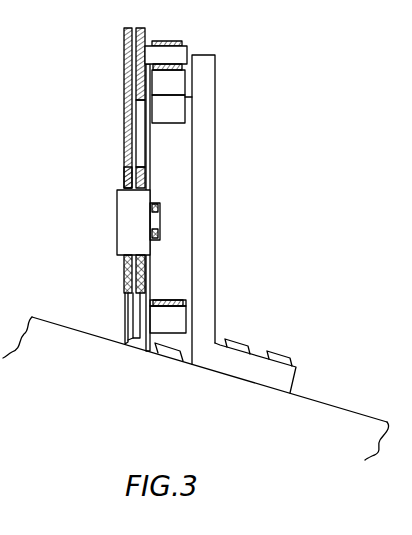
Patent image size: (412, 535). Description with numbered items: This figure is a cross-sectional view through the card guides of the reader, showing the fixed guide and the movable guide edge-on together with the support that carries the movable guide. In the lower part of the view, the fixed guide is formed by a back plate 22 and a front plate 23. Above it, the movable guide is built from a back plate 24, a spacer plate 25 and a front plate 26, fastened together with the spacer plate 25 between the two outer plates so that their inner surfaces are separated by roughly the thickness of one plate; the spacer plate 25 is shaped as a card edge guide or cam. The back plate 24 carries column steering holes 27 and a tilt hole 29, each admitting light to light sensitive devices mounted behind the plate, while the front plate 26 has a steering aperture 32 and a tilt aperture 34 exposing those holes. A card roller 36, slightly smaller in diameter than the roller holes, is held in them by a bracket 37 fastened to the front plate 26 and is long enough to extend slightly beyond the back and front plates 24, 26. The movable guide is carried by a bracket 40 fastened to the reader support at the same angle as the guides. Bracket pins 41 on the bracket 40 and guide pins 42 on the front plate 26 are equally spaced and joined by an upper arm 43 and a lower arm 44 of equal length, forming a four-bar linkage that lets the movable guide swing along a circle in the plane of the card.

The back plate 22 is at (125, 317).
The front plate 23 is at (135, 325).
The back plate 24 is at (118, 273).
The spacer plate 25 is at (133, 297).
The front plate 26 is at (148, 279).
The column steering holes 27 is at (118, 162).
The tilt hole 29 is at (123, 187).
The steering aperture 32 is at (148, 154).
The tilt aperture 34 is at (148, 186).
The card roller 36 is at (117, 223).
The bracket 37 is at (156, 203).
The bracket 40 is at (217, 245).
The bracket pins 41 is at (185, 107).
The guide pins 42 is at (188, 48).
The upper arm 43 is at (185, 86).
The lower arm 44 is at (186, 304).